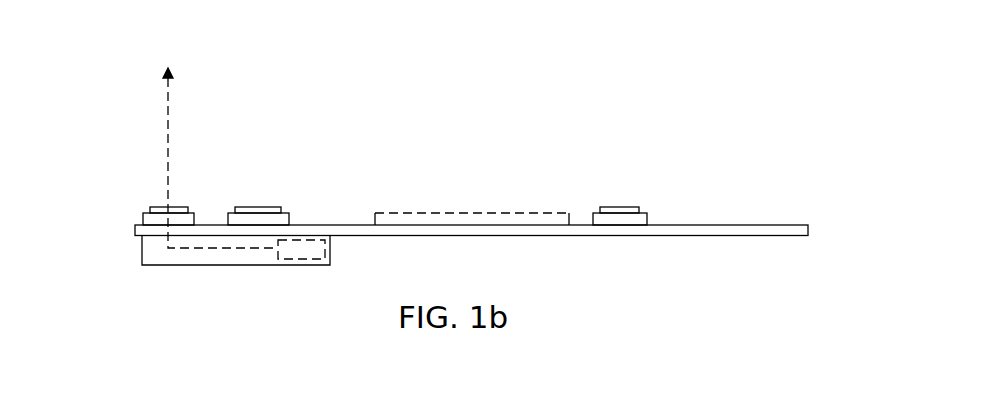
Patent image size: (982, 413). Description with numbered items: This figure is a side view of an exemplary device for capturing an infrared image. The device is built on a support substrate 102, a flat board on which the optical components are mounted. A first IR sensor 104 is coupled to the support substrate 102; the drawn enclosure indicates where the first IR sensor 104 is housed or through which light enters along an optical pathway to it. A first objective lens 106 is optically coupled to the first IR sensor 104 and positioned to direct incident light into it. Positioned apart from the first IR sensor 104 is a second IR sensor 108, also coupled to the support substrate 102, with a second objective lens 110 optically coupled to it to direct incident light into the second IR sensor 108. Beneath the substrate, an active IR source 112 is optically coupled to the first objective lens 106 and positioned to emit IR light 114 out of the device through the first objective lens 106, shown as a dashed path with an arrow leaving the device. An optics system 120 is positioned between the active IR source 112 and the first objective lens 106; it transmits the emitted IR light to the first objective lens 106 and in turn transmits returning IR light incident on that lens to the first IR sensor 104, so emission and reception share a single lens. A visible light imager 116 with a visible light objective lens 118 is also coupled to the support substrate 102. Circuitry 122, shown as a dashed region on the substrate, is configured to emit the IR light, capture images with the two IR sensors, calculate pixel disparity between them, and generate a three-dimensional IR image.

The support substrate 102 is at (742, 225).
The first IR sensor 104 is at (143, 212).
The first objective lens 106 is at (170, 206).
The second IR sensor 108 is at (648, 213).
The second objective lens 110 is at (618, 207).
The active IR source 112 is at (302, 259).
The IR light 114 is at (167, 118).
The visible light imager 116 is at (290, 213).
The visible light objective lens 118 is at (260, 207).
The optics system 120 is at (205, 265).
The circuitry 122 is at (455, 213).